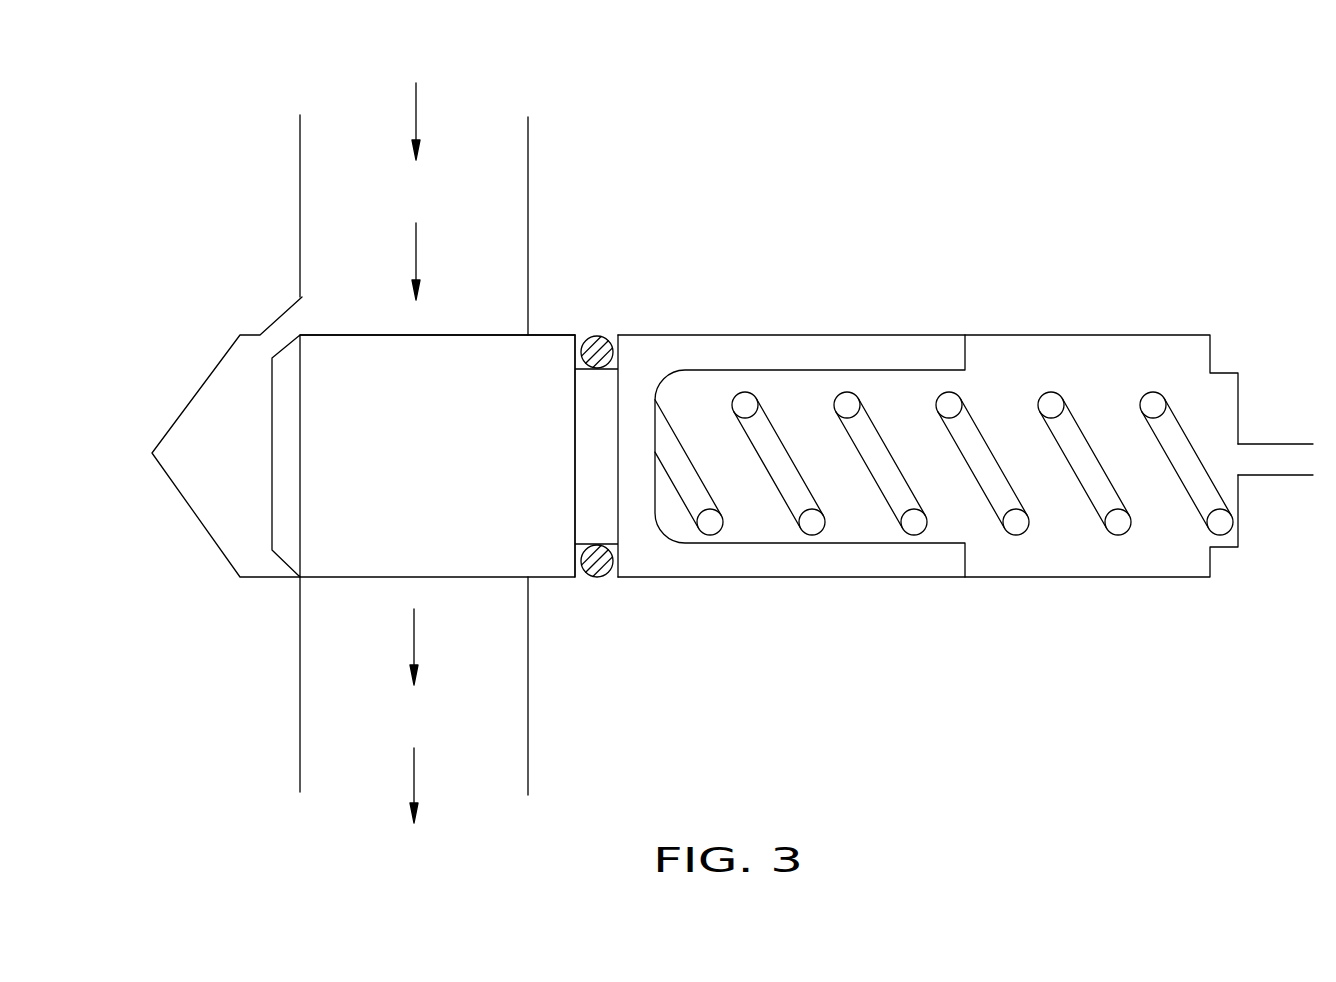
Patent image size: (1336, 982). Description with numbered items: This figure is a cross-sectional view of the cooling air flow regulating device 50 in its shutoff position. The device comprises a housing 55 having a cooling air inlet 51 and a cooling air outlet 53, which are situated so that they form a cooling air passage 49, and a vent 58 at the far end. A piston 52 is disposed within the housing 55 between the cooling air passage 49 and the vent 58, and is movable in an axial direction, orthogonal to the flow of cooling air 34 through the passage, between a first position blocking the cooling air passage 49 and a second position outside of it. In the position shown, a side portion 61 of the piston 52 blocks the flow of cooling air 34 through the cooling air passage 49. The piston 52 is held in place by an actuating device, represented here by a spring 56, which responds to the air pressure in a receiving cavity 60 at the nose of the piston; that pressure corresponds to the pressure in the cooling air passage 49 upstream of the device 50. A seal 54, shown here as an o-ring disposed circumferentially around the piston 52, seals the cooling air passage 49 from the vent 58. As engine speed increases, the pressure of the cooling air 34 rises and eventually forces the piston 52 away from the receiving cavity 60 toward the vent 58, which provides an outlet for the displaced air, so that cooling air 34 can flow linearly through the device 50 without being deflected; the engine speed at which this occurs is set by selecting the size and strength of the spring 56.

The cooling air 34 is at (418, 113).
The cooling air passage 49 is at (482, 185).
The cooling air flow regulating device 50 is at (1012, 224).
The cooling air inlet 51 is at (302, 197).
The piston 52 is at (490, 498).
The cooling air outlet 53 is at (297, 727).
The seal 54 is at (600, 343).
The housing 55 is at (1098, 335).
The spring 56 is at (1027, 530).
The vent 58 is at (1277, 457).
The receiving cavity 60 is at (210, 493).
The side portion 61 is at (361, 318).